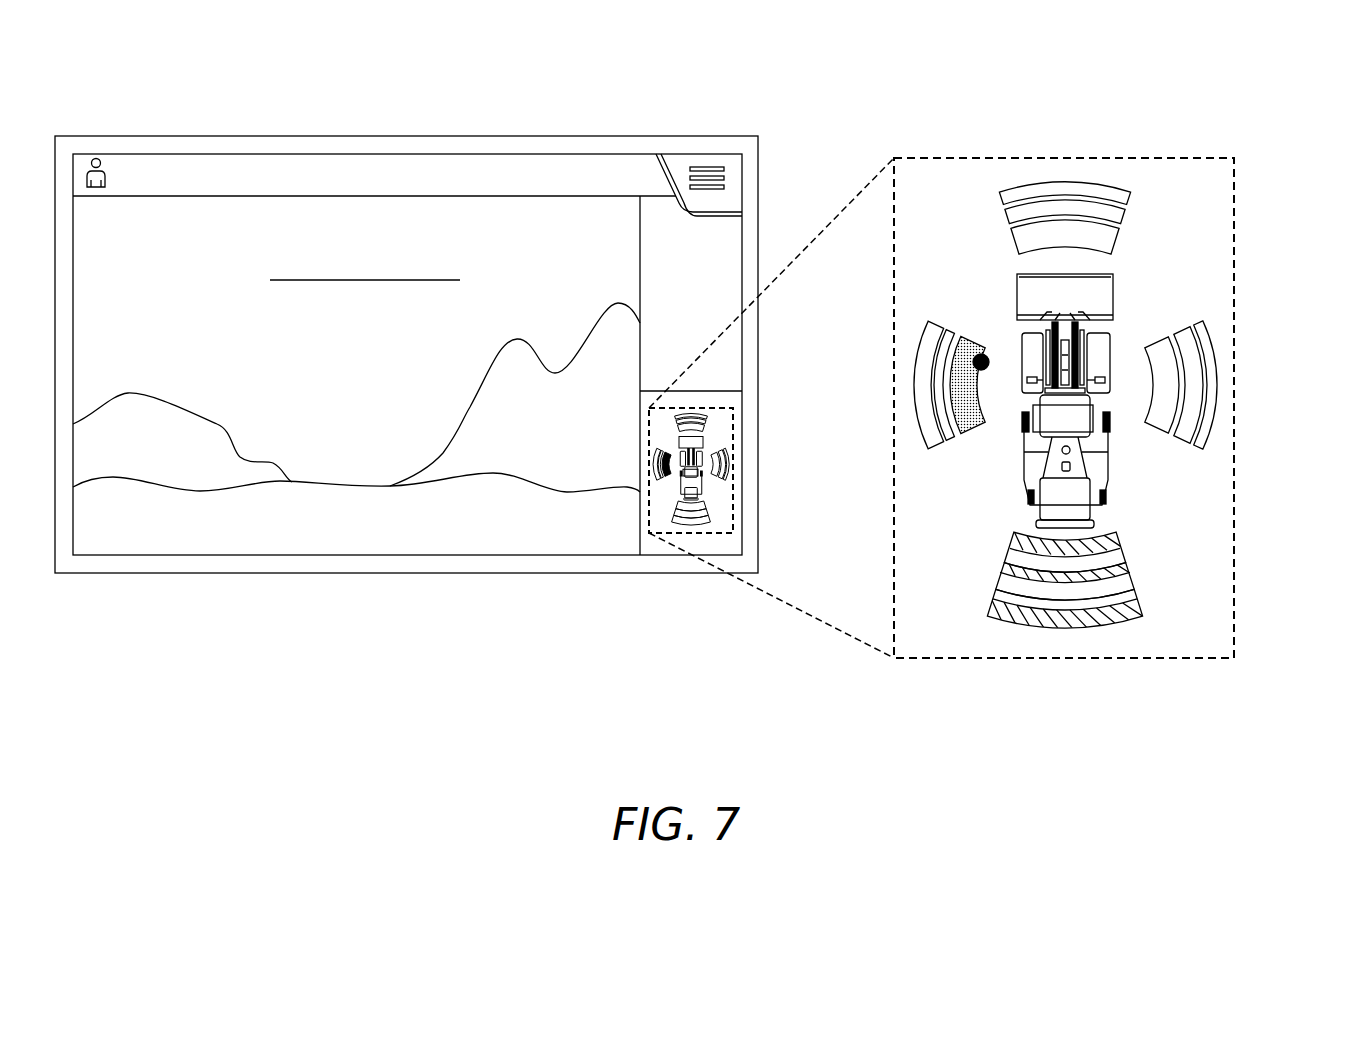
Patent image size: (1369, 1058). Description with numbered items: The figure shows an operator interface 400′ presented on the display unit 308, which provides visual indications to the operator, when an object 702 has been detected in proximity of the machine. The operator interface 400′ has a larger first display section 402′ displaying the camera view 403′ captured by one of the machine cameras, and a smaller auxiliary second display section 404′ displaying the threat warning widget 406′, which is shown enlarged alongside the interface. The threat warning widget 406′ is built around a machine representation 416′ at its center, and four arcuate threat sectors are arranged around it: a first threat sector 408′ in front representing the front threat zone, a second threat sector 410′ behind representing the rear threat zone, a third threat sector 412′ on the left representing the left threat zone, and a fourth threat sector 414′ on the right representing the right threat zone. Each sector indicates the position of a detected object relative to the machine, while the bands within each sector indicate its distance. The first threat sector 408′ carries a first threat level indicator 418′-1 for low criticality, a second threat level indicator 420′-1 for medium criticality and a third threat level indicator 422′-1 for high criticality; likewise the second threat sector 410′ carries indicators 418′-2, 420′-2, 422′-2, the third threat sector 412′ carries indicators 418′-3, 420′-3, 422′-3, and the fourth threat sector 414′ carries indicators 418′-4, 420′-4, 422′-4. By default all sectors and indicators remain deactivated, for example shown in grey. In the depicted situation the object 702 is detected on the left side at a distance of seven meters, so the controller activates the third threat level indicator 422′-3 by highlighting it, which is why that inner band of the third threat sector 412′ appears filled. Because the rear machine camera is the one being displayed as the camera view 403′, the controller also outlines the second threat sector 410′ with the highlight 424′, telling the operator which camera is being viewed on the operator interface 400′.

The display unit 308 is at (190, 136).
The operator interface 400′ is at (478, 147).
The first display section 402′ is at (628, 229).
The camera view 403′ is at (393, 311).
The second display section 404′ is at (718, 390).
The threat warning widget 406′ is at (718, 437).
The first threat sector 408′ is at (1110, 181).
The second threat sector 410′ is at (1100, 620).
The third threat sector 412′ is at (917, 398).
The fourth threat sector 414′ is at (1208, 395).
The machine representation 416′ is at (1015, 415).
The first threat level indicator 418′-1 is at (1128, 196).
The second threat level indicator 420′-1 is at (1123, 222).
The third threat level indicator 422′-1 is at (1118, 249).
The first threat level indicator 418′-2 is at (1100, 617).
The second threat level indicator 420′-2 is at (1117, 573).
The third threat level indicator 422′-2 is at (1112, 548).
The first threat level indicator 418′-3 is at (958, 466).
The second threat level indicator 420′-3 is at (962, 328).
The third threat level indicator 422′-3 is at (990, 448).
The first threat level indicator 418′-4 is at (1198, 448).
The second threat level indicator 420′-4 is at (1170, 323).
The third threat level indicator 422′-4 is at (1147, 447).
The highlight 424′ is at (1124, 618).
The object 702 is at (982, 360).